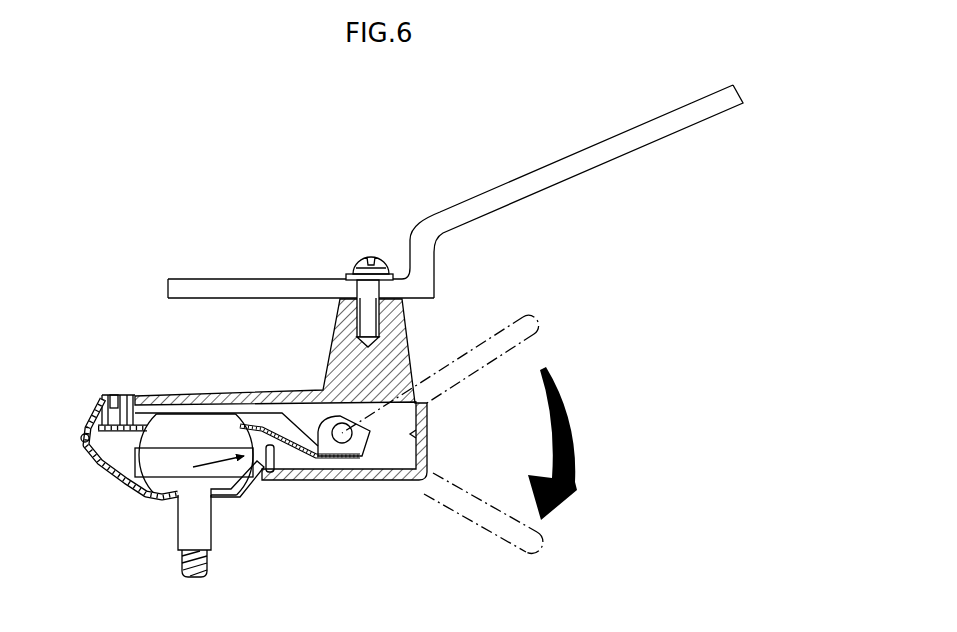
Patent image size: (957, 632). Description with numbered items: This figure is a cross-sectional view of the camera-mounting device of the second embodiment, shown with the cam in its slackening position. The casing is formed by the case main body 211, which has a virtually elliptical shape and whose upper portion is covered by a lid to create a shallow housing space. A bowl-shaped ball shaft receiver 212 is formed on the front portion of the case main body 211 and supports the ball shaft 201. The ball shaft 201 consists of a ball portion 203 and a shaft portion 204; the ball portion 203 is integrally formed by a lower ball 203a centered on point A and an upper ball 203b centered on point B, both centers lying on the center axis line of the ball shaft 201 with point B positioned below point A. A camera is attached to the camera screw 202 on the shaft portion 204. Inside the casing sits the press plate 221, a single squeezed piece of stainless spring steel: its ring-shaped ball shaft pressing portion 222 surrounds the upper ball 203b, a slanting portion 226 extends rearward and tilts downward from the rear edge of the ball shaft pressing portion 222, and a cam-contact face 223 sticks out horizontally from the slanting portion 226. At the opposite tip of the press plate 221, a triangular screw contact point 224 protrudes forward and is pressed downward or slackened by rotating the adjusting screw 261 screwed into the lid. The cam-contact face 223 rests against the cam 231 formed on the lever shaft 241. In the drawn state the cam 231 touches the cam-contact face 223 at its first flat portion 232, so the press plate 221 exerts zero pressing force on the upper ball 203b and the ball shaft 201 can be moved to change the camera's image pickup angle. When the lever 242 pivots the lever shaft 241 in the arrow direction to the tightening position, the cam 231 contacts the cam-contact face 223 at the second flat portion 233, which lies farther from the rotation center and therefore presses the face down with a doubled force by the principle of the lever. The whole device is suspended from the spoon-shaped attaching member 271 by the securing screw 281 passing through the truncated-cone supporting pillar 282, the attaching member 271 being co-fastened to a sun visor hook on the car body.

The ball shaft 201 is at (197, 515).
The camera screw 202 is at (207, 565).
The ball portion 203 is at (119, 452).
The lower ball 203a is at (152, 485).
The upper ball 203b is at (215, 433).
The shaft portion 204 is at (178, 542).
The case main body 211 is at (297, 471).
The ball shaft receiver 212 is at (140, 493).
The press plate 221 is at (267, 420).
The ball shaft pressing portion 222 is at (140, 415).
The cam-contact face 223 is at (357, 460).
The screw contact point 224 is at (82, 436).
The slanting portion 226 is at (288, 444).
The cam 231 is at (417, 432).
The first flat portion 232 is at (337, 458).
The second flat portion 233 is at (362, 448).
The lever shaft 241 is at (300, 394).
The lever 242 is at (534, 322).
The adjusting screw 261 is at (115, 396).
The attaching member 271 is at (550, 172).
The securing screw 281 is at (367, 259).
The supporting pillar 282 is at (413, 347).